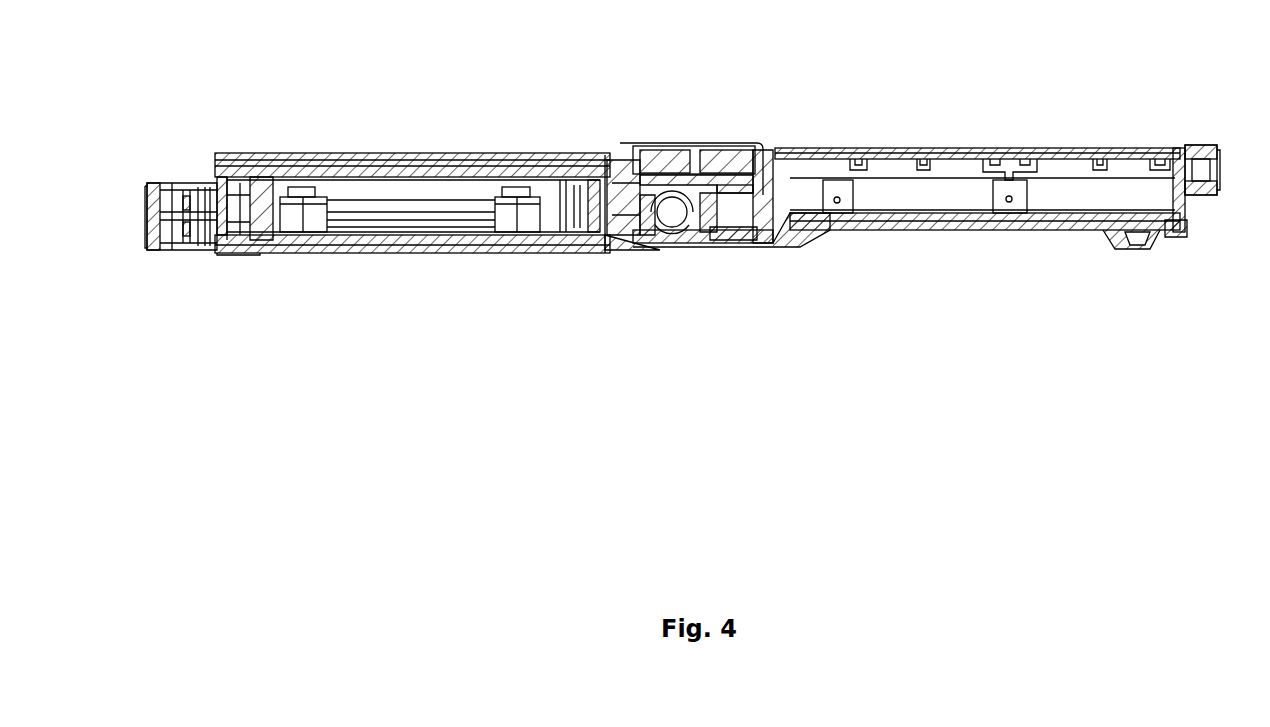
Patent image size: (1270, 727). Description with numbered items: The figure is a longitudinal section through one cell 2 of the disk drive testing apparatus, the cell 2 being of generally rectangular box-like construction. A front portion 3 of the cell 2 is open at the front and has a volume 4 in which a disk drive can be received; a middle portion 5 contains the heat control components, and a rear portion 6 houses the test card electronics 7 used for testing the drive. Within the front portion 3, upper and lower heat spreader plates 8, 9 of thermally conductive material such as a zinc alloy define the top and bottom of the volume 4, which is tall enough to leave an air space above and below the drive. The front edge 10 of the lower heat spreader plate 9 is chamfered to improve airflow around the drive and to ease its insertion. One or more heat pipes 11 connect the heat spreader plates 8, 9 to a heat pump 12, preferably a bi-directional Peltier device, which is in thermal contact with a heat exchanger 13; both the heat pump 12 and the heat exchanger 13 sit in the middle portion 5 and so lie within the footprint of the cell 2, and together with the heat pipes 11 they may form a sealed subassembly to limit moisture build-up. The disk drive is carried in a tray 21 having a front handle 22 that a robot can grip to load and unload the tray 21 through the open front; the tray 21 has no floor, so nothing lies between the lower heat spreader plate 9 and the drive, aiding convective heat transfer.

The cell 2 is at (1158, 147).
The front portion 3 is at (459, 284).
The volume 4 is at (415, 188).
The middle portion 5 is at (714, 283).
The rear portion 6 is at (968, 280).
The test card electronics 7 is at (964, 175).
The upper heat spreader plate 8 is at (358, 168).
The lower heat spreader plate 9 is at (387, 246).
The front edge 10 is at (262, 196).
The heat pipe 11 is at (624, 187).
The heat pump 12 is at (705, 176).
The heat exchanger 13 is at (664, 162).
The tray 21 is at (335, 193).
The front handle 22 is at (150, 203).